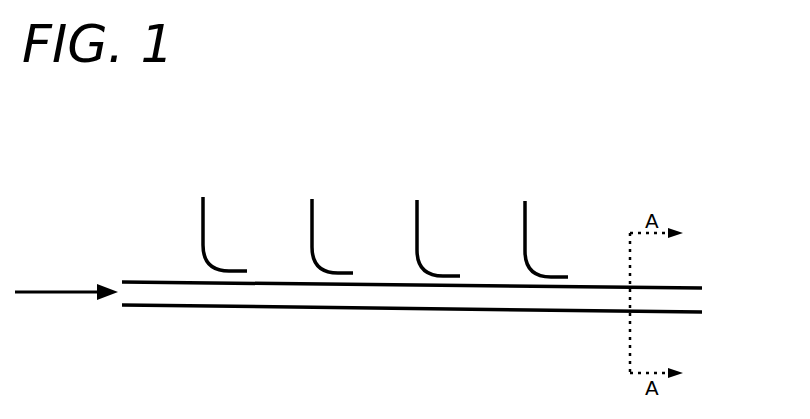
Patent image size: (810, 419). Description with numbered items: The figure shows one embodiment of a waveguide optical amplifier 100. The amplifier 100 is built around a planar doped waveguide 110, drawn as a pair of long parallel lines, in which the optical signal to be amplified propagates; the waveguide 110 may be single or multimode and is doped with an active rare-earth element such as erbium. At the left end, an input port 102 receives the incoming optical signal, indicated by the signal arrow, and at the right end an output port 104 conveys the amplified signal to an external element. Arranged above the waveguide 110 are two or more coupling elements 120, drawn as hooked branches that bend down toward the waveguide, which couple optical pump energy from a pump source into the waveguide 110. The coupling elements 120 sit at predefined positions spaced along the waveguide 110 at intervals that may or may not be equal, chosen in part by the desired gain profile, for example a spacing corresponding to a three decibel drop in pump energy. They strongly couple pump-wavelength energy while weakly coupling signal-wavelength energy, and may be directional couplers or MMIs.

The waveguide optical amplifier 100 is at (178, 158).
The input port 102 is at (125, 293).
The output port 104 is at (700, 298).
The planar doped waveguide 110 is at (345, 309).
The coupling elements 120 is at (525, 232).